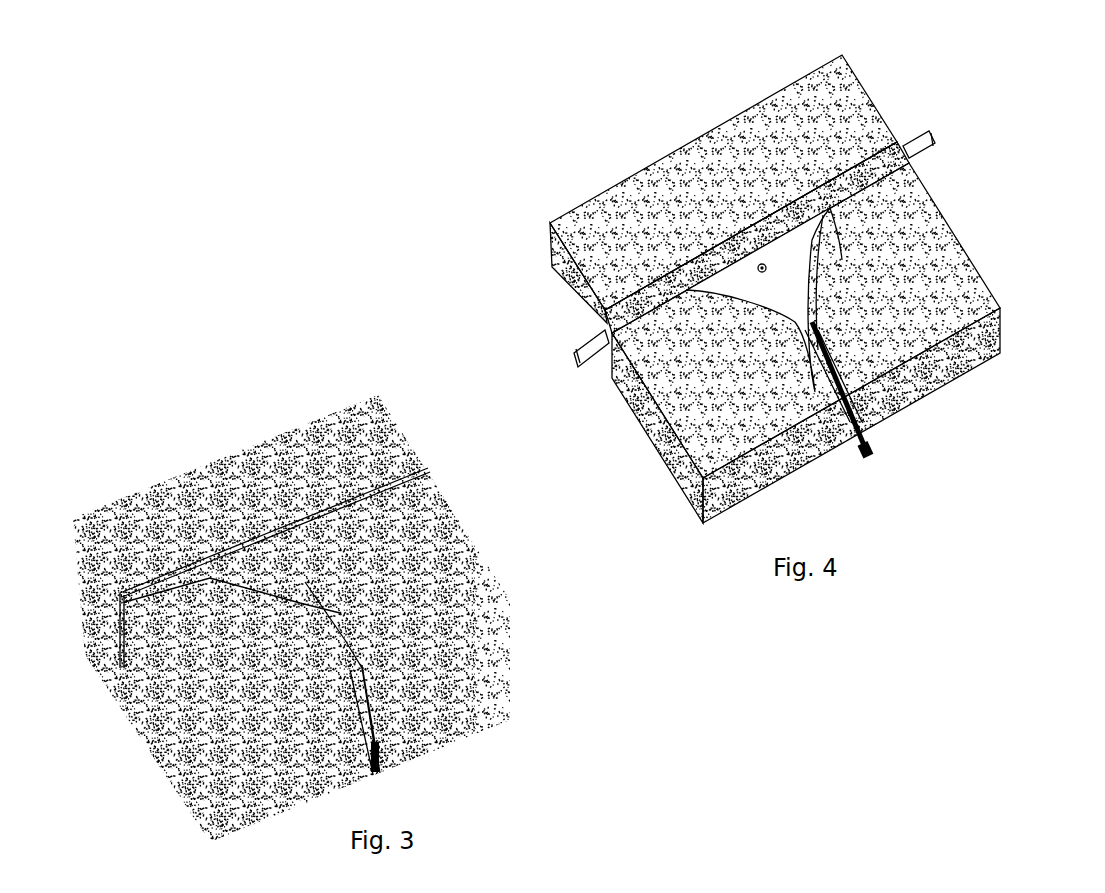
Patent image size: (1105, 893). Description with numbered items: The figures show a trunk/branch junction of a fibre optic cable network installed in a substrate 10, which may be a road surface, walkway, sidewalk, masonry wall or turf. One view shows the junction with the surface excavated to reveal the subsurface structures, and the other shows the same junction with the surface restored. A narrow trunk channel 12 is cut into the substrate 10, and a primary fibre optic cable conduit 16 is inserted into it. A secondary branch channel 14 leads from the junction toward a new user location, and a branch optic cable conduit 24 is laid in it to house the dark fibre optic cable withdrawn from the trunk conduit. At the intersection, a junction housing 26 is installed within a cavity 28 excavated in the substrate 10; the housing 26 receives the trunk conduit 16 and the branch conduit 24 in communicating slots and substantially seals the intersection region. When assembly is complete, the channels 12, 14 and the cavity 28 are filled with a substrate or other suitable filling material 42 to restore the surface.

In FIG. 4, the substrate 10 is at (723, 288).
In FIG. 4, the trunk channel 12 is at (703, 194).
In FIG. 4, the branch channel 14 is at (830, 337).
In FIG. 4, the primary fibre optic cable conduit 16 is at (580, 348).
In FIG. 4, the branch optic cable conduit 24 is at (865, 450).
In FIG. 4, the junction housing 26 is at (700, 240).
In FIG. 4, the cavity 28 is at (880, 217).
In FIG. 3, the filling material 42 is at (250, 527).